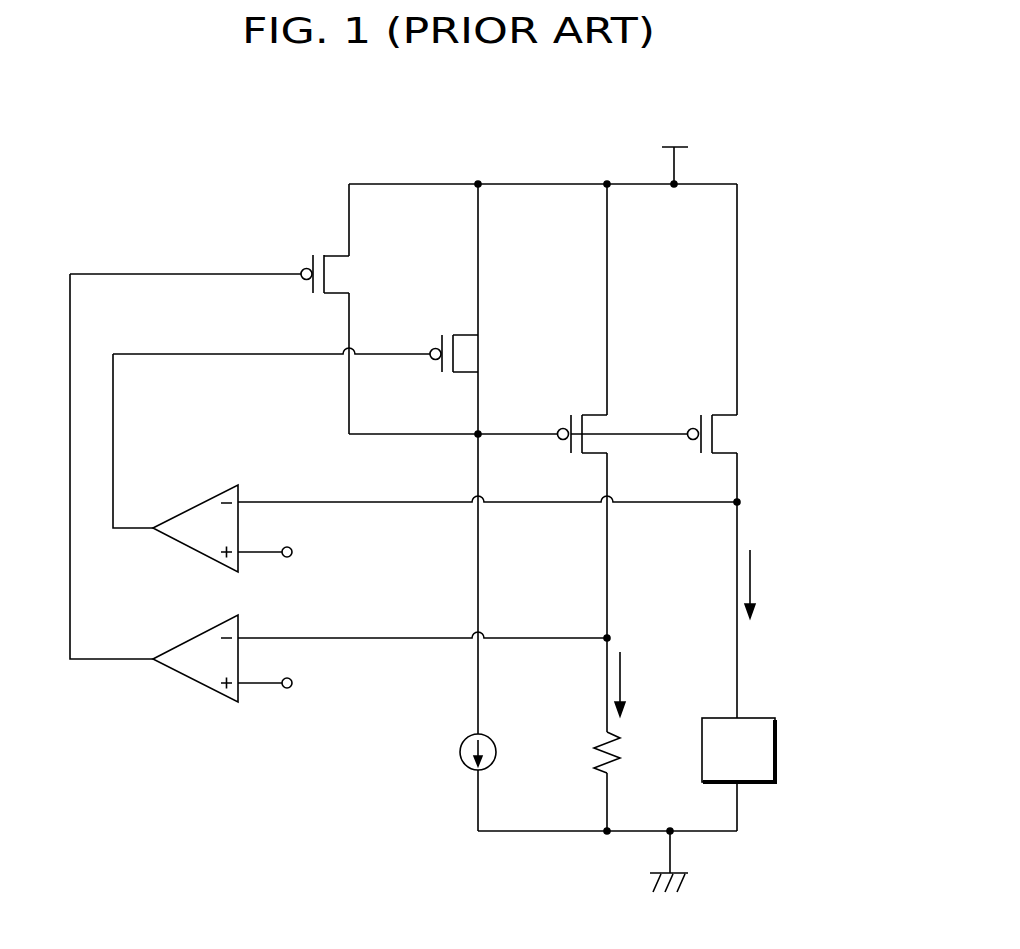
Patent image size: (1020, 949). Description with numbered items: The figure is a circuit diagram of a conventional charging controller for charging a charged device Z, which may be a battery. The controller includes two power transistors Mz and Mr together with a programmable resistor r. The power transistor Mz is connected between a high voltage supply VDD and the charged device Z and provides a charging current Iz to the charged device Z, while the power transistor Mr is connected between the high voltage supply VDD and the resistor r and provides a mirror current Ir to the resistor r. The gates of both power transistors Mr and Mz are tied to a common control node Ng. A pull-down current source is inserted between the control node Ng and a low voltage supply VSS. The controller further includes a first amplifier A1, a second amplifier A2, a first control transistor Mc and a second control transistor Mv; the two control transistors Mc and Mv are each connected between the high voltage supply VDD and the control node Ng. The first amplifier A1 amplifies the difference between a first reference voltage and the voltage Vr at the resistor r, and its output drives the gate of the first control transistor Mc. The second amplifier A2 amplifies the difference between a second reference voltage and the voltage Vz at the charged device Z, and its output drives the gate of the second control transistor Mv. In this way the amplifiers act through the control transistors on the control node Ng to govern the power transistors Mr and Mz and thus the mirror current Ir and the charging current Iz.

The first control transistor Mc is at (226, 274).
The second control transistor Mv is at (312, 353).
The power transistor Mr is at (623, 425).
The power transistor Mz is at (728, 434).
The control node Ng is at (453, 420).
The voltage at the device Z Vz is at (505, 502).
The voltage at the resistor r Vr is at (424, 625).
The first amplifier A1 is at (154, 488).
The second amplifier A2 is at (175, 463).
The mirror current Ir is at (630, 684).
The charging current Iz is at (760, 584).
The programmable resistor r is at (599, 752).
The charged device Z is at (738, 750).
The high voltage supply VDD is at (674, 151).
The low voltage supply VSS is at (670, 878).